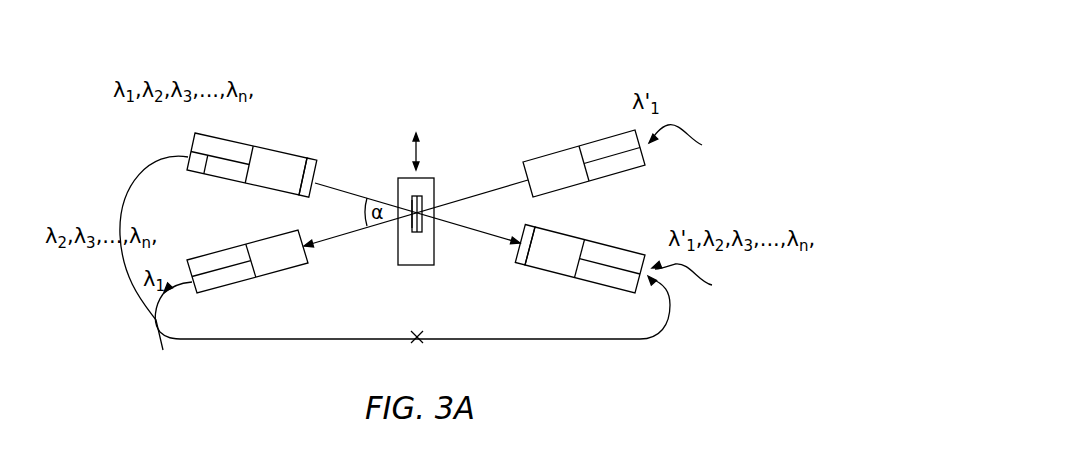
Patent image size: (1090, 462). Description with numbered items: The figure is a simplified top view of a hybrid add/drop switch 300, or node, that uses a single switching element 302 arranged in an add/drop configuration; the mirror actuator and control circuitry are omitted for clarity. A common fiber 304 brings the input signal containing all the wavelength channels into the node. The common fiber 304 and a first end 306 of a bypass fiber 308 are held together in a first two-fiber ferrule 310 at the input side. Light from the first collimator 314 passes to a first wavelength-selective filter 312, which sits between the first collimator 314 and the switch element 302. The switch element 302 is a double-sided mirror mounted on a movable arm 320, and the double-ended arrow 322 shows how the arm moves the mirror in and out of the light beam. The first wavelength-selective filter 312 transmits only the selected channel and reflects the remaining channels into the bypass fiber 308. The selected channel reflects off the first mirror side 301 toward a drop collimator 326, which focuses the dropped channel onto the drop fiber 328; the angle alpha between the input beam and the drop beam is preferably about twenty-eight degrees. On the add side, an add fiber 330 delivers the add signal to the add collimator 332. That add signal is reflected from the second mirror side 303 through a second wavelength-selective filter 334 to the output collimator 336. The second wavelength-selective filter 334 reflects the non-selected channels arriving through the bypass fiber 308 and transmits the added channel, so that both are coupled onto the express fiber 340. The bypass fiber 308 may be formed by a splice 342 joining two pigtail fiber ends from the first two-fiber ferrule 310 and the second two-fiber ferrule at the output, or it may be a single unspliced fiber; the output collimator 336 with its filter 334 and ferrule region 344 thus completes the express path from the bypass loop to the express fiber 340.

The hybrid add/drop switch 300 is at (707, 105).
The first mirror side 301 is at (412, 222).
The switching element 302 is at (420, 233).
The second mirror side 303 is at (425, 198).
The common fiber 304 is at (172, 152).
The first end of bypass fiber 306 is at (206, 175).
The bypass fiber 308 is at (277, 340).
The first 2-fiber ferrule 310 is at (217, 138).
The first wavelength-selective filter 312 is at (310, 158).
The first collimator 314 is at (278, 195).
The movable arm 320 is at (417, 267).
The double-ended arrow 322 is at (420, 150).
The drop collimator 326 is at (278, 274).
The drop fiber 328 is at (153, 326).
The add fiber 330 is at (698, 141).
The add collimator 332 is at (551, 152).
The second wavelength-selective filter 334 is at (518, 264).
The output collimator 336 is at (556, 228).
The express fiber 340 is at (699, 278).
The splice 342 is at (420, 342).
The output fiber ferrule 344 is at (607, 289).